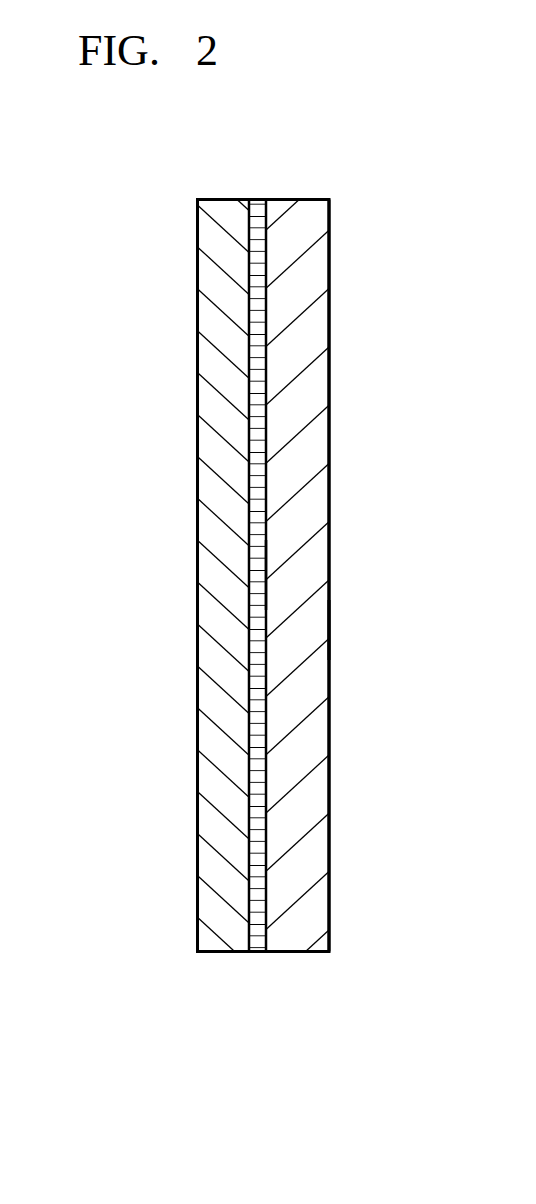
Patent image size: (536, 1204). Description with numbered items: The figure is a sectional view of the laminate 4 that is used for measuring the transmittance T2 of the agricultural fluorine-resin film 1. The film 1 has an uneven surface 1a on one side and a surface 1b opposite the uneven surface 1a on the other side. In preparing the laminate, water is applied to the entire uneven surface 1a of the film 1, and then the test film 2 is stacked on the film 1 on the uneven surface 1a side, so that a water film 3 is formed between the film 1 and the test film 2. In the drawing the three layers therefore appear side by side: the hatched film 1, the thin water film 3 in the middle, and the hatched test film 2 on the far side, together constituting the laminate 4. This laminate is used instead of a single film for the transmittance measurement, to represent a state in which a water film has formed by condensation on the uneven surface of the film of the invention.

The laminate 4 is at (310, 151).
The agricultural fluorine-resin film 1 is at (299, 953).
The uneven surface 1a is at (266, 582).
The surface opposite the uneven surface 1b is at (329, 632).
The test film 2 is at (228, 953).
The water film 3 is at (255, 953).